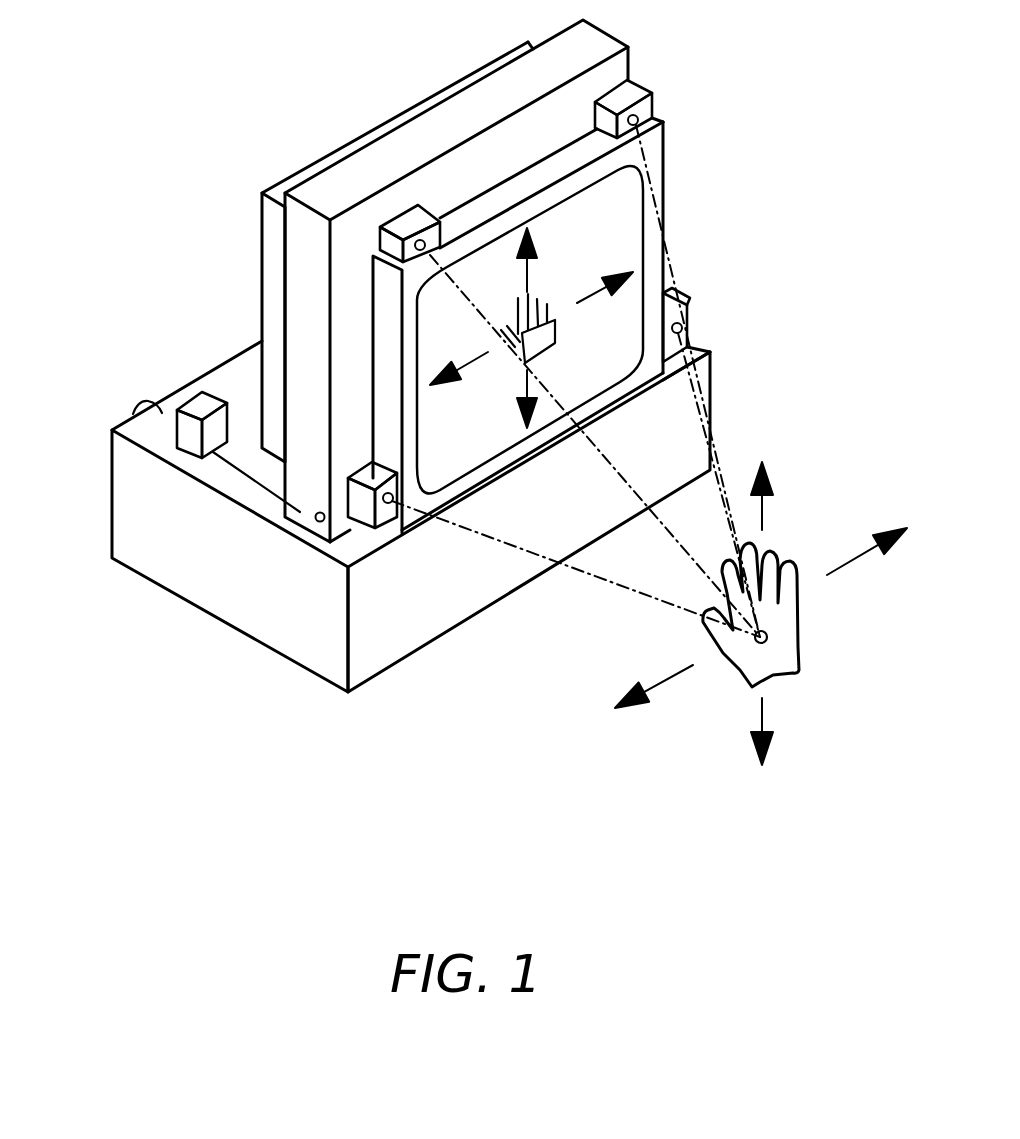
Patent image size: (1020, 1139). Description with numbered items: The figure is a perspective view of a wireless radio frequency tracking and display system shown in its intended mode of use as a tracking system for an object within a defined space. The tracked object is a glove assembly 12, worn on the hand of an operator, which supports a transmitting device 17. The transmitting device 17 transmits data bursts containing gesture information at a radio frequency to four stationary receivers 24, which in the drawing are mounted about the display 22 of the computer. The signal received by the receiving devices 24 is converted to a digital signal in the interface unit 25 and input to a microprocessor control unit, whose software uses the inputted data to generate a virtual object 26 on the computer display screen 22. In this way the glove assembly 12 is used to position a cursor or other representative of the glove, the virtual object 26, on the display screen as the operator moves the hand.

The glove assembly 12 is at (792, 630).
The transmitting device 17 is at (767, 642).
The display screen 22 is at (666, 176).
The receiving devices 24 is at (420, 243).
The interface unit 25 is at (190, 437).
The virtual object 26 is at (555, 333).